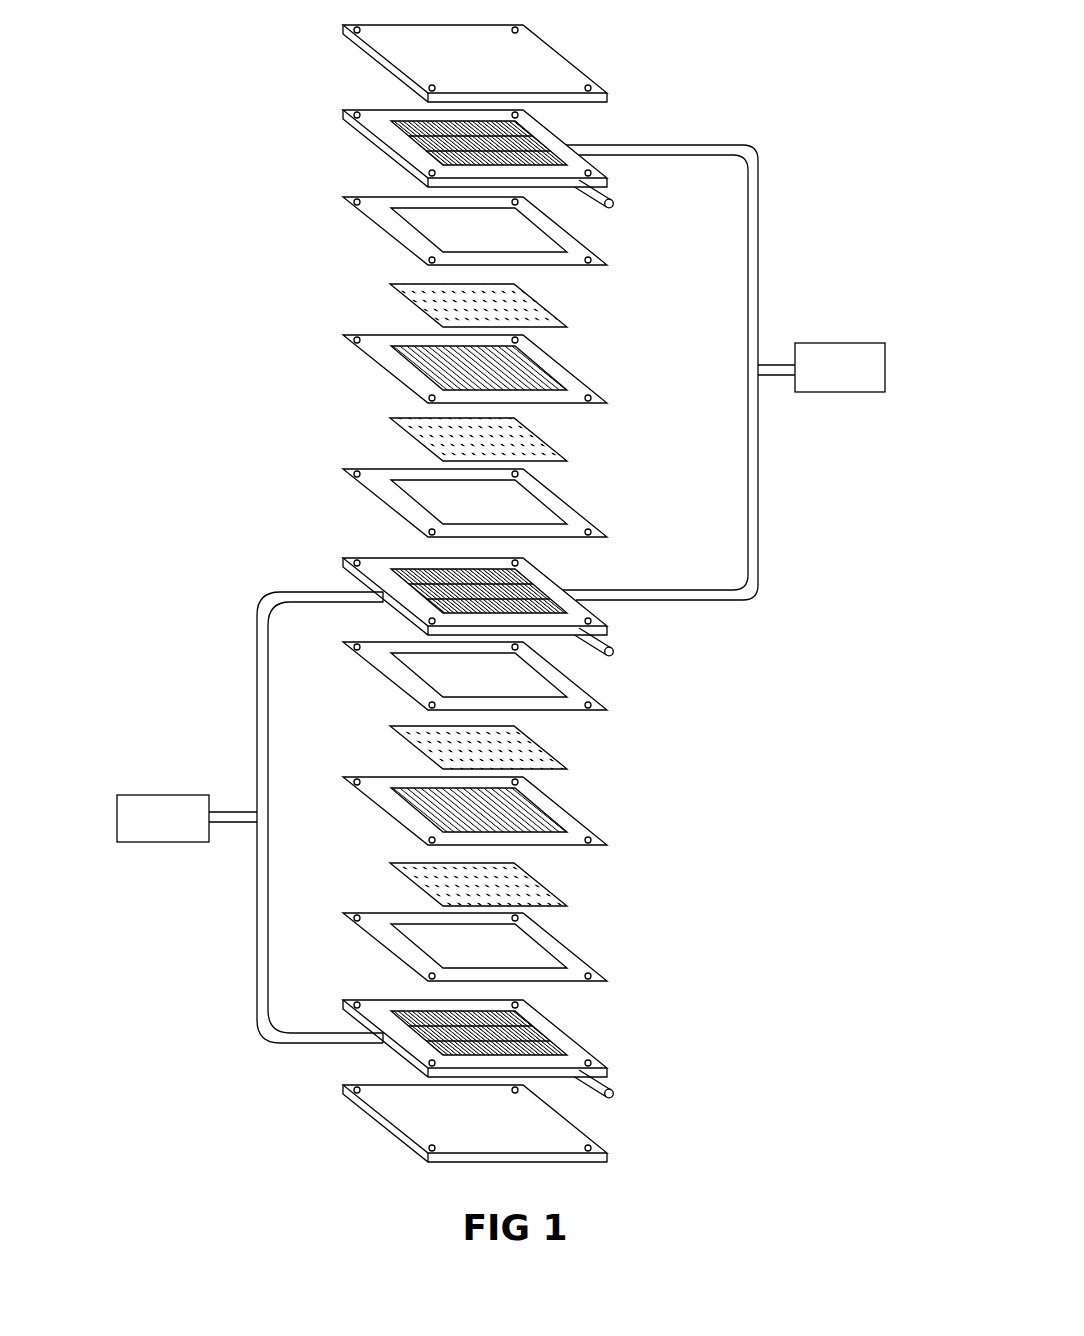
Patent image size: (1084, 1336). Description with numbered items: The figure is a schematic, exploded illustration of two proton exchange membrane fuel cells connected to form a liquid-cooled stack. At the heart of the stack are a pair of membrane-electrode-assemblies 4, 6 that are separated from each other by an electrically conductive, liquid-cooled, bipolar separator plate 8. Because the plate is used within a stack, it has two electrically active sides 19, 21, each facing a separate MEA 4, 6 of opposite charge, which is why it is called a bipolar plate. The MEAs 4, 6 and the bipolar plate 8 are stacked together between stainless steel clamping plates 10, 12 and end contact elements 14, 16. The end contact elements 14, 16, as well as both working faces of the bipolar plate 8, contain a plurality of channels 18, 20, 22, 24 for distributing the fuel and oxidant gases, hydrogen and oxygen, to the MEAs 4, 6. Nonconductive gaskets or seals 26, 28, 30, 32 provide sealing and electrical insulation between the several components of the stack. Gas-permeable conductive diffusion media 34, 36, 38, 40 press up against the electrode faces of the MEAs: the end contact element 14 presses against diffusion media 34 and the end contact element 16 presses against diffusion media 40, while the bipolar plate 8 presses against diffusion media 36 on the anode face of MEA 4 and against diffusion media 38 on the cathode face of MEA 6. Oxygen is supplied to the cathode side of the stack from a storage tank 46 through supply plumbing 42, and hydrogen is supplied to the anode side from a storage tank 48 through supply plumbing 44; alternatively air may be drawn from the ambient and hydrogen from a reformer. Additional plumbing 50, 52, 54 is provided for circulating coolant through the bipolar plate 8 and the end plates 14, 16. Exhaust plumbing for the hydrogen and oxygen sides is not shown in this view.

The membrane-electrode-assembly 4 is at (374, 367).
The membrane-electrode-assembly 6 is at (588, 813).
The bipolar separator plate 8 is at (494, 589).
The clamping plate 10 is at (360, 60).
The clamping plate 12 is at (596, 1123).
The end contact element 14 is at (474, 135).
The end contact element 16 is at (526, 1021).
The channels 18 is at (528, 143).
The electrically active side 19 is at (529, 572).
The channels 20 is at (494, 589).
The electrically active side 21 is at (398, 630).
The channels 22 is at (568, 640).
The channels 24 is at (530, 1020).
The gasket 26 is at (377, 224).
The gasket 28 is at (383, 502).
The gasket 30 is at (603, 708).
The gasket 32 is at (560, 940).
The diffusion media 34 is at (403, 296).
The diffusion media 36 is at (410, 434).
The diffusion media 38 is at (555, 752).
The diffusion media 40 is at (555, 880).
The supply plumbing 42 is at (759, 518).
The supply plumbing 44 is at (262, 632).
The storage tank 46 is at (833, 343).
The storage tank 48 is at (134, 795).
The plumbing 50 is at (614, 202).
The plumbing 52 is at (613, 645).
The plumbing 54 is at (612, 1078).